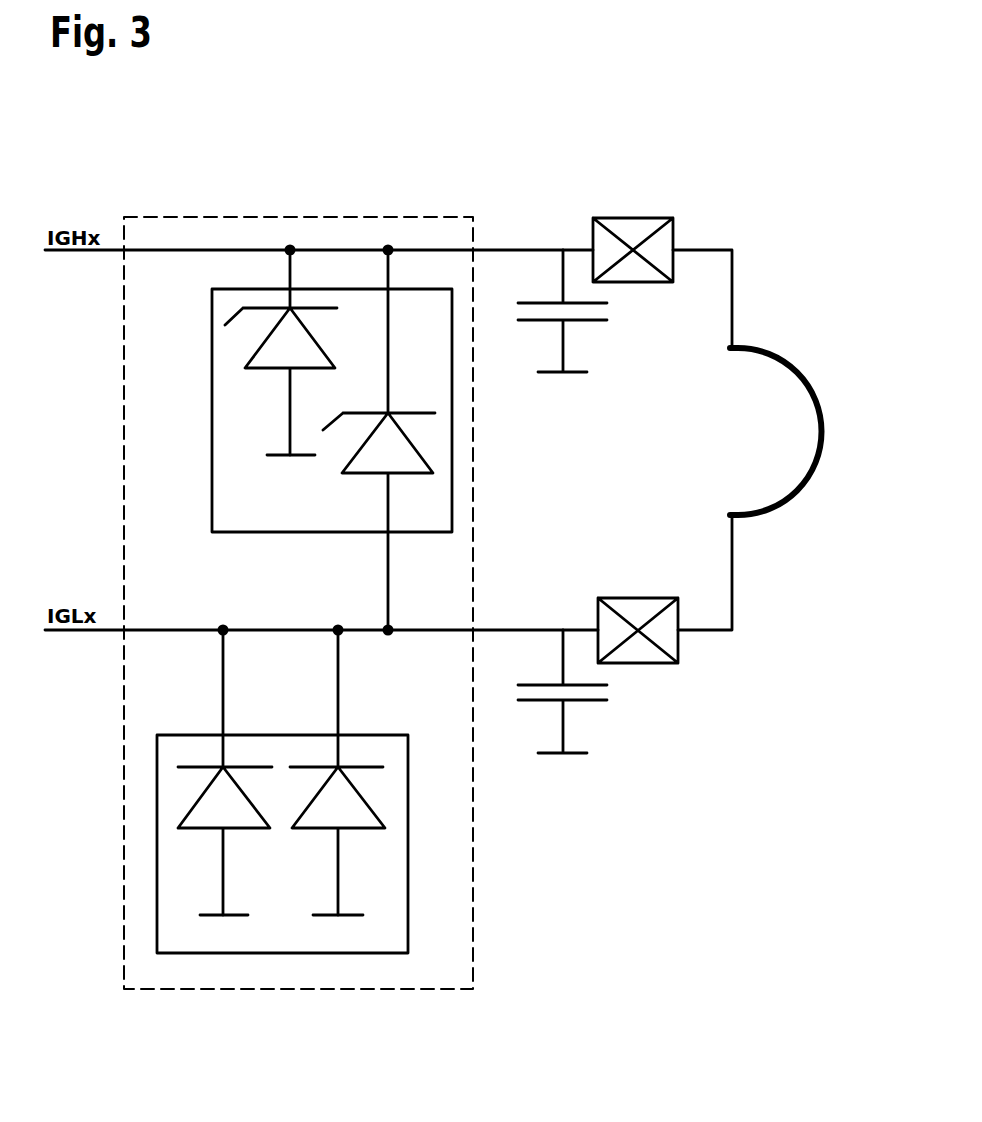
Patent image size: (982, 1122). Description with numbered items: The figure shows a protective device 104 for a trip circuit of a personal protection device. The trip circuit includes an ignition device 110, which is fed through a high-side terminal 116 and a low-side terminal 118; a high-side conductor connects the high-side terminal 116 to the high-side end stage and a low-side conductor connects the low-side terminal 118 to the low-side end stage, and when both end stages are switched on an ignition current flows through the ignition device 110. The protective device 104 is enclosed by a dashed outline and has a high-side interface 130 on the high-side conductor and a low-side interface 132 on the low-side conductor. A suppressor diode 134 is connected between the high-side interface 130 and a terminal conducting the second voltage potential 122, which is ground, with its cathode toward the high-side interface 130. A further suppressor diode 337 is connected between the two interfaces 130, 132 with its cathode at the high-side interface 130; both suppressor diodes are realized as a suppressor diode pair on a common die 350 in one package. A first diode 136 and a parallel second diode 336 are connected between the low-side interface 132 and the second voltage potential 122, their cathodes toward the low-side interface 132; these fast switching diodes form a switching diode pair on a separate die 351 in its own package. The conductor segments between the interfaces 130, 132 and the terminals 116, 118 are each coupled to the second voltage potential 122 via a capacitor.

The protective device 104 is at (158, 217).
The high-side interface 130 is at (290, 250).
The low-side interface 132 is at (388, 628).
The high-side terminal 116 is at (632, 218).
The low-side terminal 118 is at (635, 598).
The ignition device 110 is at (803, 380).
The second voltage potential 122 is at (575, 372).
The die 350 is at (212, 310).
The suppressor diode 134 is at (263, 343).
The further suppressor diode 337 is at (413, 445).
The die 351 is at (157, 752).
The first diode 136 is at (197, 798).
The second diode 336 is at (363, 797).